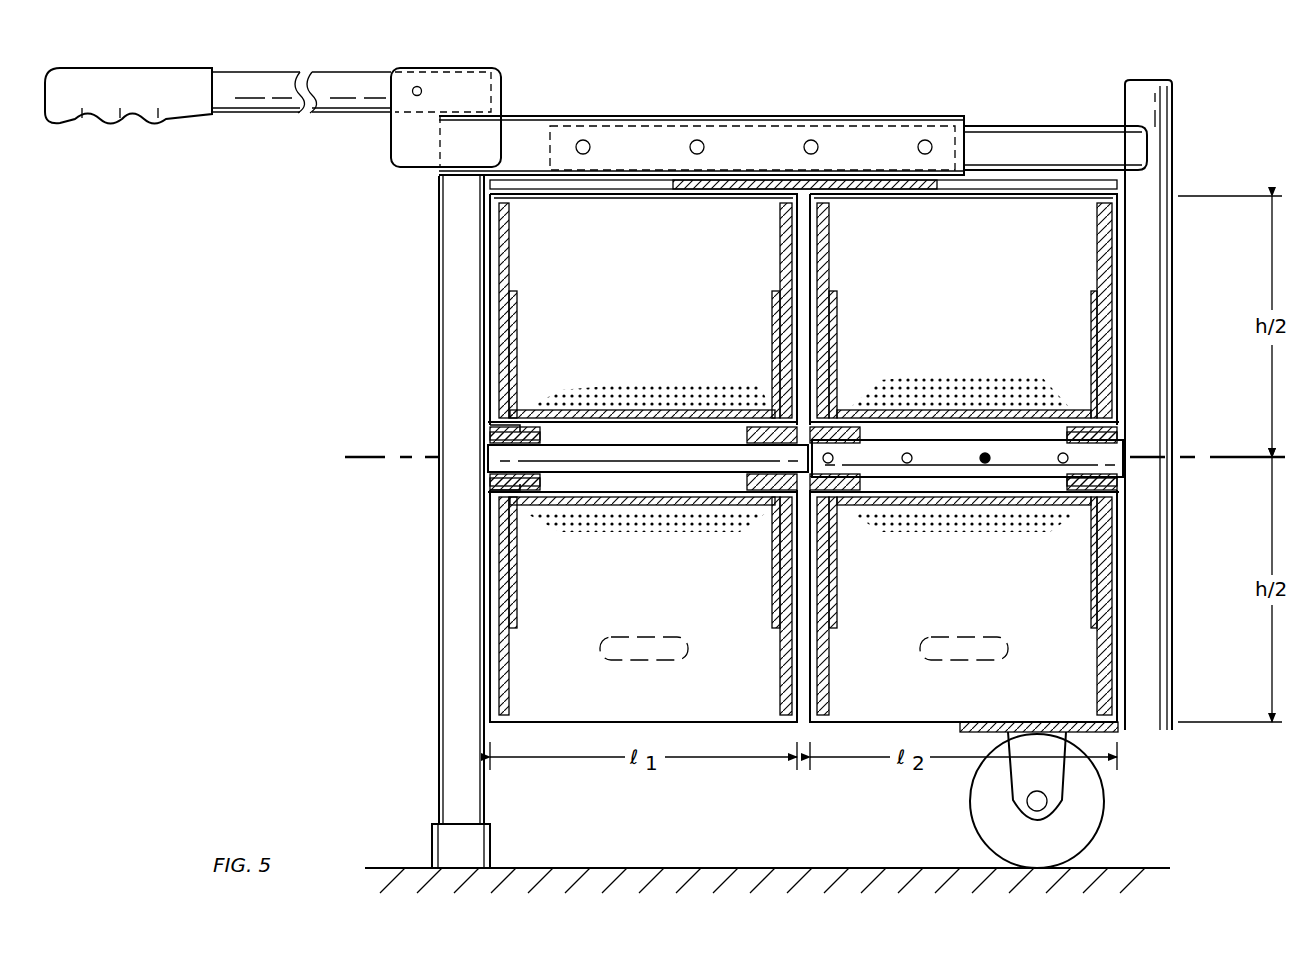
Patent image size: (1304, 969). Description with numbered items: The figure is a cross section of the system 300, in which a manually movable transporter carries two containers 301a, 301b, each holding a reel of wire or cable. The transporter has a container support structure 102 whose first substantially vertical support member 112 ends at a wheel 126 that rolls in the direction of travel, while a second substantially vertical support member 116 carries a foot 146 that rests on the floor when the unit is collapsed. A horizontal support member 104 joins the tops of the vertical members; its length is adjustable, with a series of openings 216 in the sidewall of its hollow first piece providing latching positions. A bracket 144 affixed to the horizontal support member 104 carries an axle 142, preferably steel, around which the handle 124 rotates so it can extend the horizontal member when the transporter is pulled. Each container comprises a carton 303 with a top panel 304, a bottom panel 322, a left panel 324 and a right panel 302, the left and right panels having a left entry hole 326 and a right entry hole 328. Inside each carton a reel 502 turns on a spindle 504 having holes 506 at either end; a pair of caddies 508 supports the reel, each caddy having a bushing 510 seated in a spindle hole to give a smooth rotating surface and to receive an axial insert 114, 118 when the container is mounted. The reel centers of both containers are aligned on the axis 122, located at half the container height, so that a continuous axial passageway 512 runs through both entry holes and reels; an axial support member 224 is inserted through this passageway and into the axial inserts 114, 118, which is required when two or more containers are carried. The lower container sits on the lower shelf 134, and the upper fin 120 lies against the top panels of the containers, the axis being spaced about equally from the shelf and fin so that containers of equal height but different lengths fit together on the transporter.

The container support structure 102 is at (415, 230).
The horizontal support member 104 is at (742, 107).
The first substantially vertical support member 112 is at (1172, 250).
The axial insert 114 is at (1118, 447).
The second substantially vertical support member 116 is at (439, 270).
The axial insert 118 is at (490, 498).
The fin 120 is at (1027, 180).
The axis 122 is at (360, 455).
The handle 124 is at (265, 117).
The wheel 126 is at (1104, 802).
The lower shelf 134 is at (1037, 725).
The axle 142 is at (417, 96).
The bracket 144 is at (501, 92).
The foot 146 is at (432, 846).
The openings 216 is at (812, 140).
The axial support member 224 is at (970, 435).
The system 300 is at (268, 470).
The container 301a is at (572, 722).
The container 301b is at (935, 722).
The right panel 302 is at (1117, 375).
The carton 303 is at (485, 600).
The top panel 304 is at (962, 190).
The bottom panel 322 is at (865, 722).
The left panel 324 is at (497, 712).
The left entry hole 326 is at (497, 425).
The right entry hole 328 is at (1115, 488).
The reel 502 is at (517, 298).
The spindle 504 is at (545, 408).
The holes 506 is at (548, 430).
The caddy 508 is at (509, 240).
The bushing 510 is at (536, 494).
The continuous axial passageway 512 is at (490, 460).